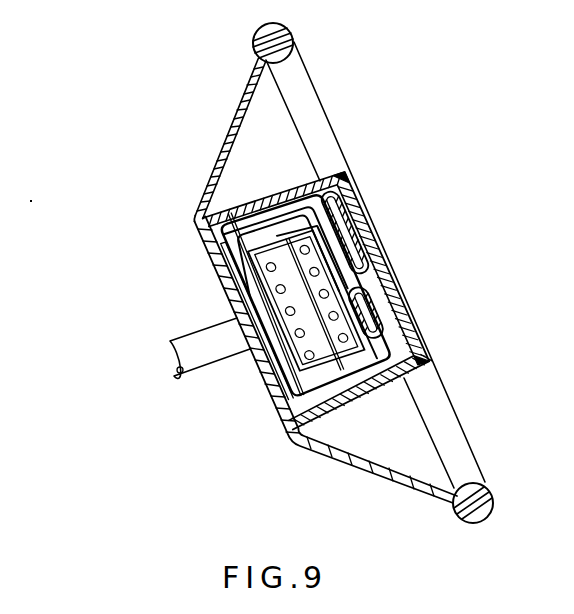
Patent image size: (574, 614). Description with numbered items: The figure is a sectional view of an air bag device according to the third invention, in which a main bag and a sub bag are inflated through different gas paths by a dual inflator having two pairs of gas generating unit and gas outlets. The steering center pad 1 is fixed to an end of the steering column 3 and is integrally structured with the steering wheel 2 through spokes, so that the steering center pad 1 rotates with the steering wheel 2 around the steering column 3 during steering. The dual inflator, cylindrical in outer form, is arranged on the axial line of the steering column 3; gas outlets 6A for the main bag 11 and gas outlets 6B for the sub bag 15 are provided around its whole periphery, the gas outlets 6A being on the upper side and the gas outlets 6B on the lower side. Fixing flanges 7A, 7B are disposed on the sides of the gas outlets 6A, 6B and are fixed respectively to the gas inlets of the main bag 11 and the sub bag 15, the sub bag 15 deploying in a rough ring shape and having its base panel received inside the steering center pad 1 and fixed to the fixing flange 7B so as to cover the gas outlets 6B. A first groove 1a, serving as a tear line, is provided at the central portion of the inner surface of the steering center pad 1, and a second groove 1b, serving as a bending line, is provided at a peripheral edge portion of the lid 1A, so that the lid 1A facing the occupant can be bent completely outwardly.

The steering center pad 1 is at (407, 320).
The lid 1A is at (400, 300).
The first groove 1a is at (395, 266).
The second groove 1b is at (352, 178).
The steering wheel 2 is at (492, 503).
The steering column 3 is at (214, 376).
The gas outlets 6A is at (266, 266).
The gas outlets 6B is at (248, 298).
The fixing flange 7A is at (412, 340).
The fixing flange 7B is at (305, 398).
The main bag 11 is at (377, 223).
The sub bag 15 is at (236, 203).